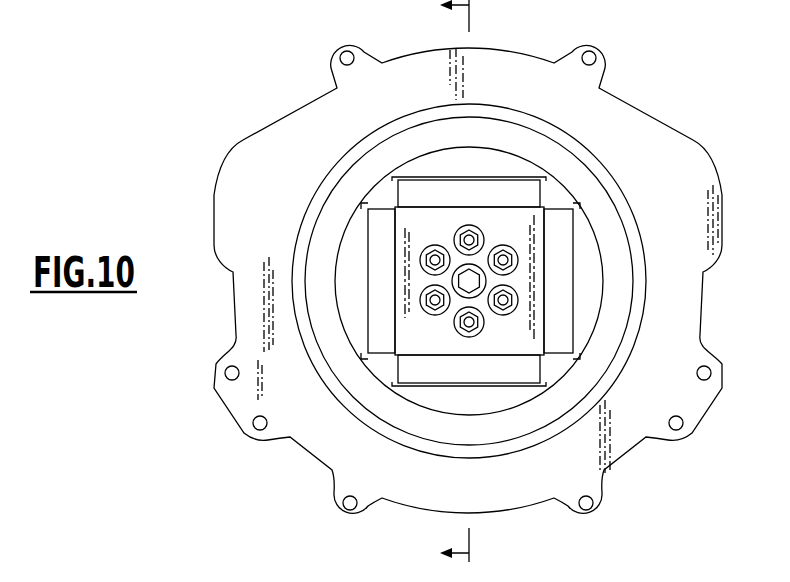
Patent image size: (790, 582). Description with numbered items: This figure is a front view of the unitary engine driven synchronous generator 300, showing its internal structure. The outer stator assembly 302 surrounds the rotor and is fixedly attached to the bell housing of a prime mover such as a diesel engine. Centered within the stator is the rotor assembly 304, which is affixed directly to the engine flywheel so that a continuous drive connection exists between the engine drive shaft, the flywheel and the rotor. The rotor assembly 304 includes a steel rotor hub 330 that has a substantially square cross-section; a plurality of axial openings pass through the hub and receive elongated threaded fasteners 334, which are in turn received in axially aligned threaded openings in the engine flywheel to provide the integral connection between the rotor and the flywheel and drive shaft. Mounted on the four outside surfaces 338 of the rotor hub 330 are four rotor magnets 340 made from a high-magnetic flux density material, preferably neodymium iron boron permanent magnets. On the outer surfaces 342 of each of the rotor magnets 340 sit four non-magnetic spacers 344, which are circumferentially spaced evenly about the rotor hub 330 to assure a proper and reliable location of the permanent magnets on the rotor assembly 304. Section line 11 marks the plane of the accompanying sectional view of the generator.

The synchronous generator 300 is at (232, 66).
The outer stator assembly 302 is at (632, 453).
The rotor assembly 304 is at (572, 193).
The rotor hub 330 is at (535, 322).
The threaded fasteners 334 is at (468, 328).
The outside surfaces 338 is at (383, 195).
The rotor magnets 340 is at (473, 192).
The outer surfaces 342 is at (518, 173).
The non-magnetic spacers 344 is at (450, 157).
The section line 11- 11 is at (476, 283).